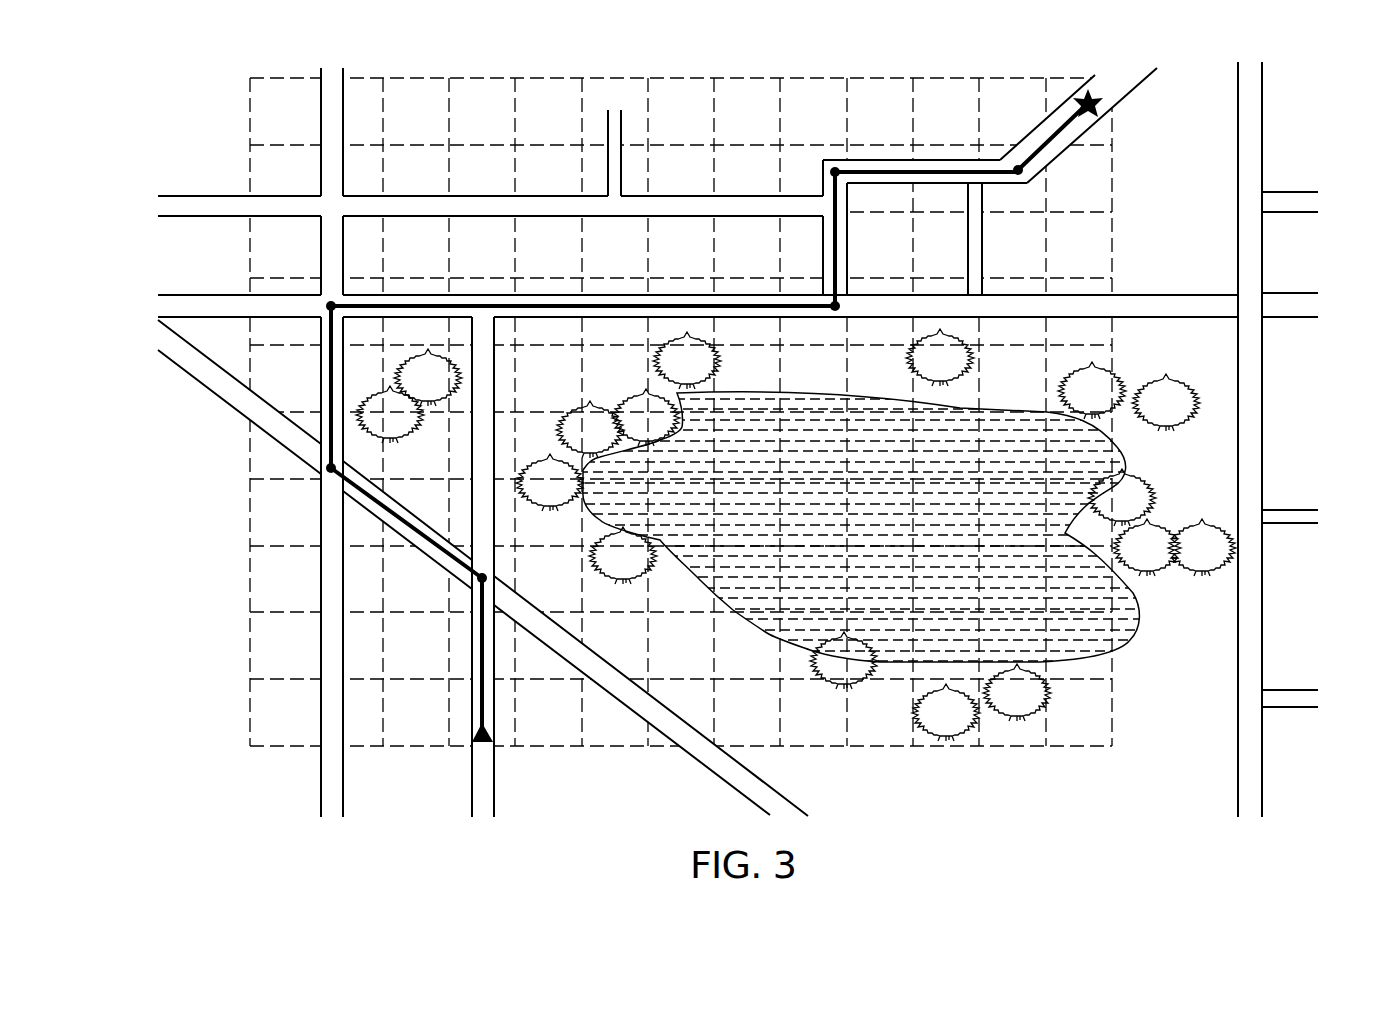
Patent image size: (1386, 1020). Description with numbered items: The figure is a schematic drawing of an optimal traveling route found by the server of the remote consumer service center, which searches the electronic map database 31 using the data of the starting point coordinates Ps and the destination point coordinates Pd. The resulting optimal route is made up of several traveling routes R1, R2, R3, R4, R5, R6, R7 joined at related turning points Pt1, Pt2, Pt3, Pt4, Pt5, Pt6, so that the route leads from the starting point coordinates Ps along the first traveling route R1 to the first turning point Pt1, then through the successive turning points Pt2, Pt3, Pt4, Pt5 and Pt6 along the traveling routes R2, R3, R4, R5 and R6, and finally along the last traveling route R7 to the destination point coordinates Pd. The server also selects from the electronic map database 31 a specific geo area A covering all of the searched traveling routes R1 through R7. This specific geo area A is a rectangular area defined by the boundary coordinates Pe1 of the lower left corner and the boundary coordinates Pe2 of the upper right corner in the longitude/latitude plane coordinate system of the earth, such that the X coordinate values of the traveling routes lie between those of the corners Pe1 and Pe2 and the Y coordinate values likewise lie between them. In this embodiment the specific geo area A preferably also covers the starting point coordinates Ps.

The electronic map database 31 is at (1212, 463).
The specific geo area A is at (1106, 698).
The starting point coordinates Ps is at (540, 722).
The destination point coordinates Pd is at (1143, 116).
The boundary coordinates of the lower left corner Pe1 is at (246, 764).
The boundary coordinates of the upper right corner Pe2 is at (1117, 64).
The turning point Pt1 is at (487, 563).
The turning point Pt2 is at (352, 466).
The turning point Pt3 is at (351, 323).
The turning point Pt4 is at (858, 314).
The turning point Pt5 is at (835, 161).
The turning point Pt6 is at (1032, 186).
The traveling route R1 is at (496, 655).
The traveling route R2 is at (406, 523).
The traveling route R3 is at (342, 387).
The traveling route R4 is at (583, 293).
The traveling route R5 is at (849, 239).
The traveling route R6 is at (926, 158).
The traveling route R7 is at (1046, 136).